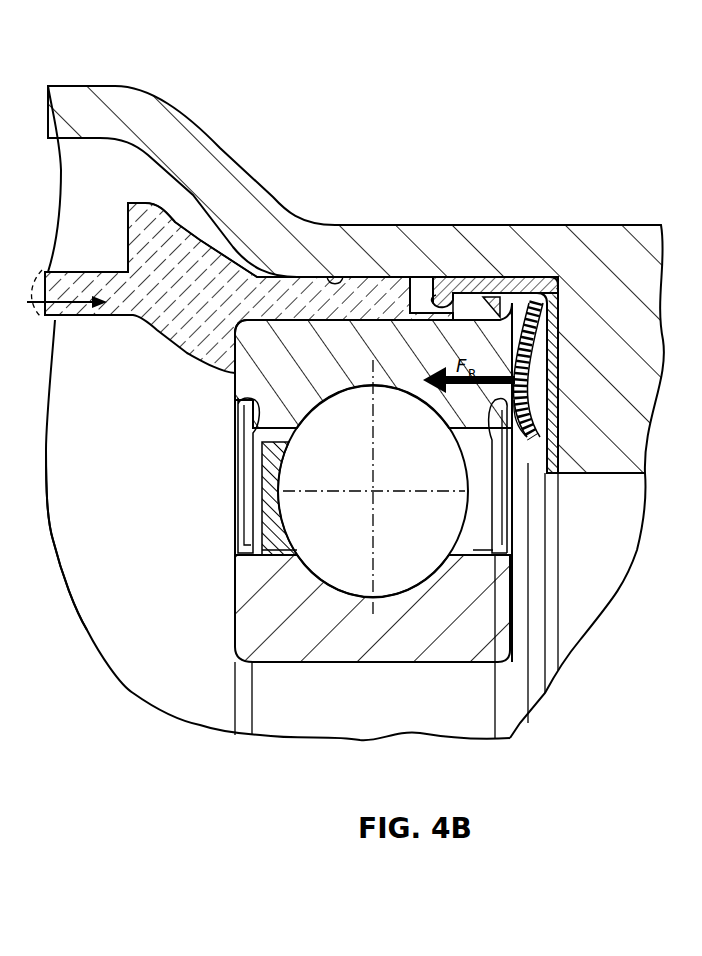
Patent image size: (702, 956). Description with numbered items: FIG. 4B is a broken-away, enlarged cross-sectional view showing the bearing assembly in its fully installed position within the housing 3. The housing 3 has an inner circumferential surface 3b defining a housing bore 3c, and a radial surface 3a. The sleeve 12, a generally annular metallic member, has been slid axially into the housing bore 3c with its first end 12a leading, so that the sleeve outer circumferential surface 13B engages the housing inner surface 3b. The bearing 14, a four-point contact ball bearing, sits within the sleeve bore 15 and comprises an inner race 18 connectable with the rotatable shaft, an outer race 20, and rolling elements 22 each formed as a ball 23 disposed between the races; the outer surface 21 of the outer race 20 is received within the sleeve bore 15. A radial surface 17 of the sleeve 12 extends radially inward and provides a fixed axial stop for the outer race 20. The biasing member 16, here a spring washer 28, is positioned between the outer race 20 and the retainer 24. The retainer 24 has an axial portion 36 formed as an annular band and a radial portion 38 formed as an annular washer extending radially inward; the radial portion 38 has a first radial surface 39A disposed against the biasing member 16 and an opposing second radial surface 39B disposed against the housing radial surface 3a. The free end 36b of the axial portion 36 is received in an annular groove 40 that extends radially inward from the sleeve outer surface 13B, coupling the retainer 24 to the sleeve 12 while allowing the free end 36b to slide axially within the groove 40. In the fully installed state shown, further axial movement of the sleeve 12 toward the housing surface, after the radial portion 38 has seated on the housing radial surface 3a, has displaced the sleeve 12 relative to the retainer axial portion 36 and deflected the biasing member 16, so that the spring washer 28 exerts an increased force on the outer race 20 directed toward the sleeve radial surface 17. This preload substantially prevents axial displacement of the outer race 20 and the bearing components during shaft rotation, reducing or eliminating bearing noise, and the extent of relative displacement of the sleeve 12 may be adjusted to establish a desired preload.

The housing 3 is at (198, 125).
The radial surface of the housing 3a is at (560, 412).
The inner circumferential surface of the housing 3b is at (347, 270).
The housing chamber or bore 3c is at (197, 212).
The sleeve 12 is at (90, 201).
The first end of the sleeve 12a is at (480, 303).
The outer circumferential surface of the sleeve 13B is at (373, 273).
The bearing 14 is at (172, 481).
The bore of the sleeve 15 is at (173, 680).
The biasing member 16 is at (550, 364).
The radial surface of the sleeve 17 is at (253, 350).
The inner race 18 is at (247, 605).
The outer race 20 is at (228, 380).
The outer ring outer surface 21 is at (296, 318).
The rolling elements 22 is at (282, 514).
The ball 23 is at (358, 585).
The retainer 24 is at (515, 250).
The spring washer 28 is at (517, 413).
The axial portion of the retainer 36 is at (523, 287).
The free end of the retainer axial portion 36b is at (443, 293).
The radial portion of the retainer 38 is at (557, 450).
The first radial surface of the retainer radial portion 39A is at (493, 458).
The second radial surface of the retainer radial portion 39B is at (560, 322).
The annular groove 40 is at (423, 303).